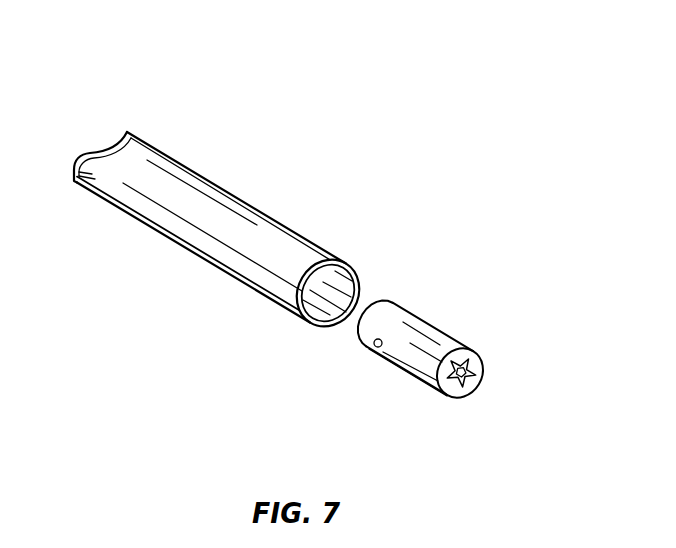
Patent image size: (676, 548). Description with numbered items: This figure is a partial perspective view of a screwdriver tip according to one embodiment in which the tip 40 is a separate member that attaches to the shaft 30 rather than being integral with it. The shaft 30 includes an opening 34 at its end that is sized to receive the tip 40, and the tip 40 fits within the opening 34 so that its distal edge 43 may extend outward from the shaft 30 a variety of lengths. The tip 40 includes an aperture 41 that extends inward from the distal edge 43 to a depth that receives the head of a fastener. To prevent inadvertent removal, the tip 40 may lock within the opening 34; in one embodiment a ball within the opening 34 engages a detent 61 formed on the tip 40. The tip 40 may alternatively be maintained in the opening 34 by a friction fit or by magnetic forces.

The shaft 30 is at (257, 225).
The opening 34 is at (333, 287).
The tip 40 is at (422, 338).
The aperture 41 is at (475, 379).
The distal edge 43 is at (445, 397).
The detent 61 is at (376, 348).